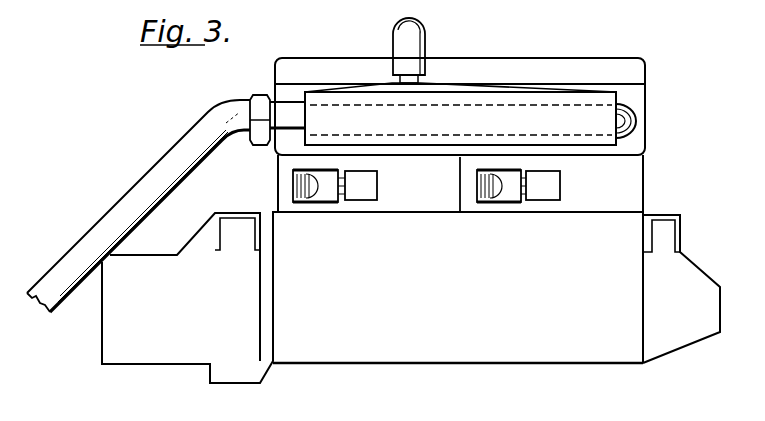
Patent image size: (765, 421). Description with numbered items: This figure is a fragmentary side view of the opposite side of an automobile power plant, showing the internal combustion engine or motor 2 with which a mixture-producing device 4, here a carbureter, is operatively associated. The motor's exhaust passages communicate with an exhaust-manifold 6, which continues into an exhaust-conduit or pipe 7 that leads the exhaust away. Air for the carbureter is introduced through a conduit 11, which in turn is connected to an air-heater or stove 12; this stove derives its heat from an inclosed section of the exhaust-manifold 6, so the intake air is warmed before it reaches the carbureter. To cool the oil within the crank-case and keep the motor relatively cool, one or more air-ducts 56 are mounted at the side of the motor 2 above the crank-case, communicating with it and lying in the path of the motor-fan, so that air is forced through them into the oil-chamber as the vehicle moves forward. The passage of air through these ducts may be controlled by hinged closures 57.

The internal combustion engine or motor 2 is at (642, 97).
The mixture-producing device 4 is at (258, 194).
The exhaust-manifold 6 is at (287, 100).
The exhaust-conduit or pipe 7 is at (217, 118).
The conduit 11 is at (424, 30).
The air-heater or stove 12 is at (565, 89).
The air-ducts 56 is at (333, 192).
The hinged closures 57 is at (361, 192).